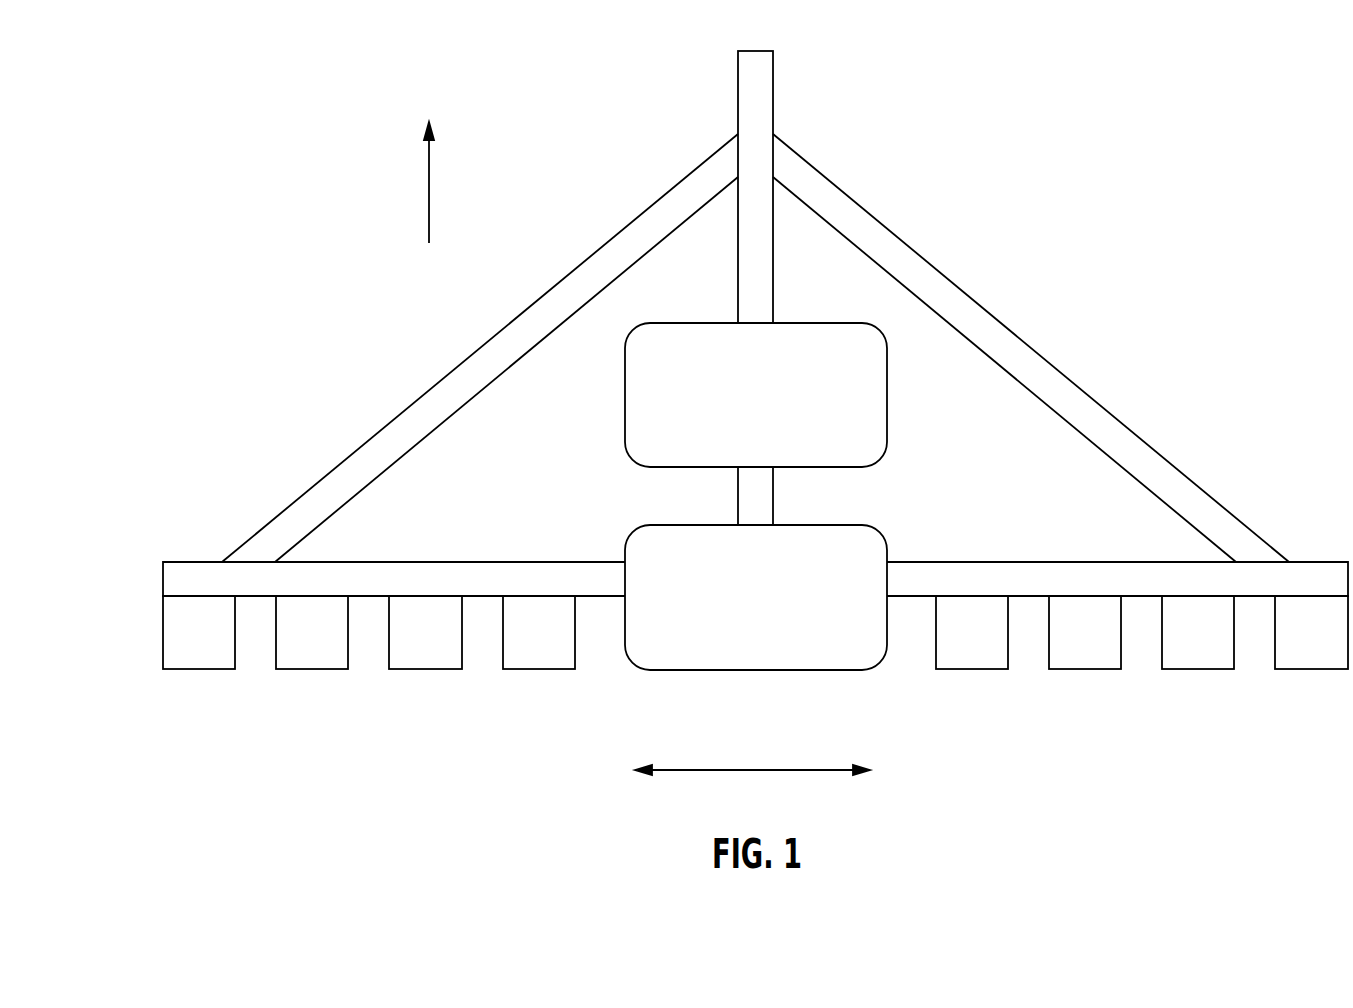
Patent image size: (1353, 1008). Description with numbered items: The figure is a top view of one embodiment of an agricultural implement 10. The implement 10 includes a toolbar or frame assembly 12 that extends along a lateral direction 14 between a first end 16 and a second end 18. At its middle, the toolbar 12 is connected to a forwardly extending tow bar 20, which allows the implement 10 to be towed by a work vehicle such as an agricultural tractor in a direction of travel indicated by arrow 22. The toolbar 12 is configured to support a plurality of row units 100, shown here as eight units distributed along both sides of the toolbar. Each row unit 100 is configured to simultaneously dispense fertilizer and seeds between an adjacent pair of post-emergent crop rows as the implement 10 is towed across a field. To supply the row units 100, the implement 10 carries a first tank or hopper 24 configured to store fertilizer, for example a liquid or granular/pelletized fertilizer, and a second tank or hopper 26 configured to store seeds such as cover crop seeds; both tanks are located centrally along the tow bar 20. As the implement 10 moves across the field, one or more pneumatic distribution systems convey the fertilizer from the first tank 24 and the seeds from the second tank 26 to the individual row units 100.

The agricultural implement 10 is at (307, 185).
The toolbar 12 is at (1017, 562).
The lateral direction 14 is at (712, 770).
The first end 16 is at (137, 587).
The second end 18 is at (1313, 500).
The tow bar 20 is at (773, 112).
The arrow 22 is at (430, 170).
The first tank 24 is at (747, 670).
The second tank 26 is at (887, 395).
The row units 100 is at (539, 669).